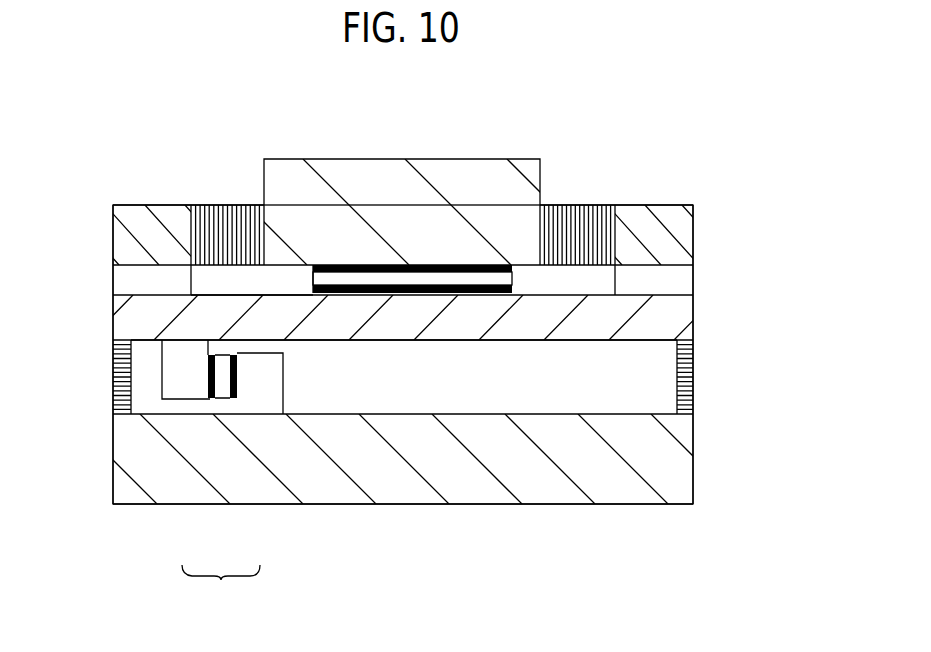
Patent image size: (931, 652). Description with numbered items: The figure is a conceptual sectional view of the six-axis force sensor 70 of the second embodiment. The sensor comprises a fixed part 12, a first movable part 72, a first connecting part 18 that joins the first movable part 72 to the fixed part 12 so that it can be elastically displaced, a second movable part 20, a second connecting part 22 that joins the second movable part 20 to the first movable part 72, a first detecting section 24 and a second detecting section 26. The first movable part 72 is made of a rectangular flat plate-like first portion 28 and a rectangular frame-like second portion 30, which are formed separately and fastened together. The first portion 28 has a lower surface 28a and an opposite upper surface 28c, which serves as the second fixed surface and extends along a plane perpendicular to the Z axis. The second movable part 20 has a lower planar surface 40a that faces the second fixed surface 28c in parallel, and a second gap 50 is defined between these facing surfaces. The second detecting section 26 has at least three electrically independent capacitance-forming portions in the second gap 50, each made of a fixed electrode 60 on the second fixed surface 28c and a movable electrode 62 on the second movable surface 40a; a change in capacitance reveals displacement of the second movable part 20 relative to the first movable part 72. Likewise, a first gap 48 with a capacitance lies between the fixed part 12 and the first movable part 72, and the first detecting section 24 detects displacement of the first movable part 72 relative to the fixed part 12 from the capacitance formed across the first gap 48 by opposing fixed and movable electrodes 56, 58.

The fixed part 12 is at (699, 472).
The first connecting part 18 is at (699, 378).
The second movable part 20 is at (512, 156).
The second connecting part 22 is at (583, 198).
The first detecting section 24 is at (221, 589).
The second detecting section 26 is at (780, 258).
The first portion 28 is at (543, 325).
The surface of first portion 28a is at (453, 340).
The second fixed surface 28c is at (223, 295).
The second portion 30 is at (683, 231).
The second movable surface 40a is at (311, 264).
The first gap 48 is at (219, 349).
The second gap 50 is at (342, 275).
The fixed electrode 56 is at (234, 398).
The movable electrode 58 is at (212, 398).
The fixed electrode 60 is at (512, 288).
The movable electrode 62 is at (512, 268).
The six-axis force sensor 70 is at (162, 157).
The first movable part 72 is at (110, 248).